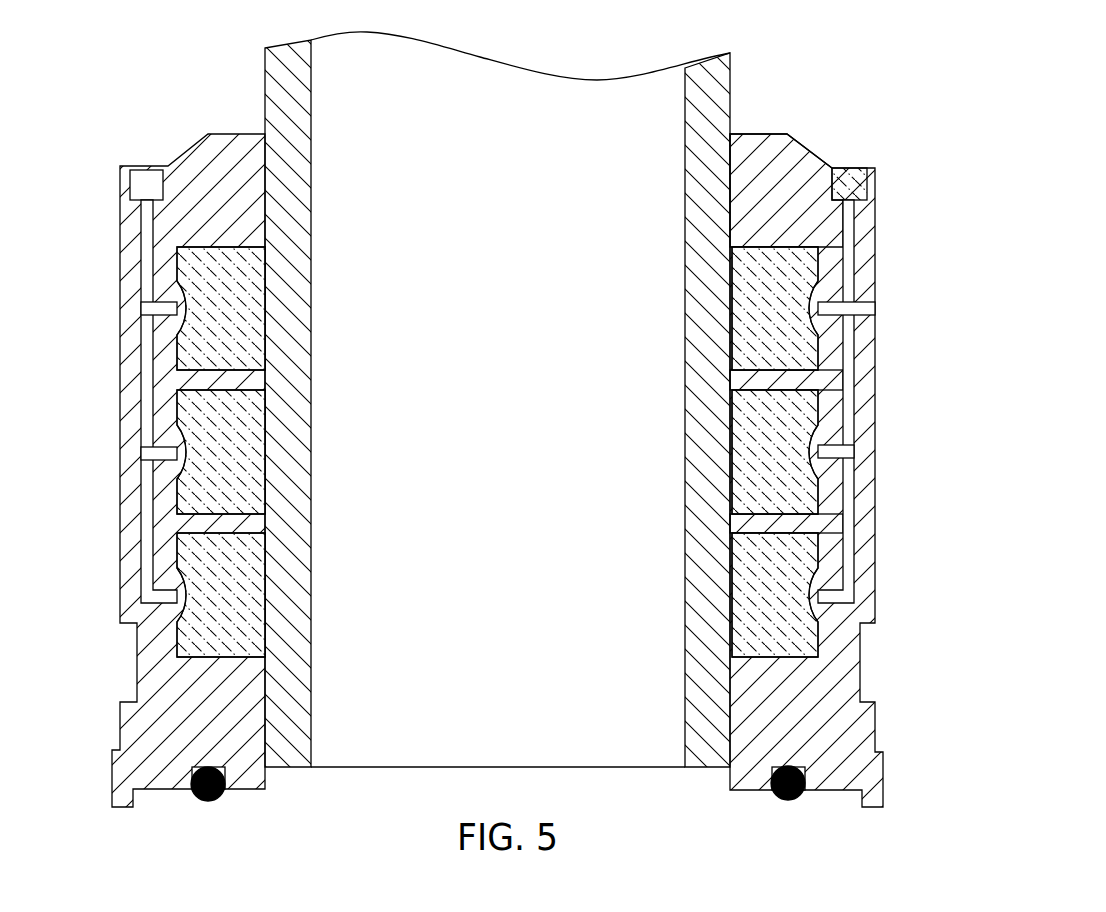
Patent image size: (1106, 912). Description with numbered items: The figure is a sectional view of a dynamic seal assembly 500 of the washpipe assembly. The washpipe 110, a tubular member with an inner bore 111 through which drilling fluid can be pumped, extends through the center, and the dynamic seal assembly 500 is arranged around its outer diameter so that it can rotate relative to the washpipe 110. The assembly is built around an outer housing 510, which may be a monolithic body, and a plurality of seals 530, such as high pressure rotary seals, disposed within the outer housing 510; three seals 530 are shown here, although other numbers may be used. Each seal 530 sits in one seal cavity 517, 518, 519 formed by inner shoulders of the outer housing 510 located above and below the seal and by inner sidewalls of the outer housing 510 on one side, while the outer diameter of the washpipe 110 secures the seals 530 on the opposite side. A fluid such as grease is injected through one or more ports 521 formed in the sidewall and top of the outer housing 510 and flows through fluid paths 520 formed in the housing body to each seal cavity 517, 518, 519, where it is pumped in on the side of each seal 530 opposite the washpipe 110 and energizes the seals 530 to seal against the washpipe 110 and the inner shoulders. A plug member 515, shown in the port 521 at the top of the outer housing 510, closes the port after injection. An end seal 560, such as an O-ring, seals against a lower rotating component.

The dynamic seal assembly 500 is at (595, 445).
The washpipe 110 is at (730, 90).
The inner bore 111 is at (312, 58).
The outer housing 510 is at (875, 192).
The plug member 515 is at (845, 168).
The seal cavity 517 is at (767, 245).
The seal cavity 518 is at (767, 383).
The seal cavity 519 is at (763, 527).
The fluid path 520 is at (848, 243).
The port 521 is at (850, 218).
The seal 530 is at (805, 268).
The end seal 560 is at (788, 800).